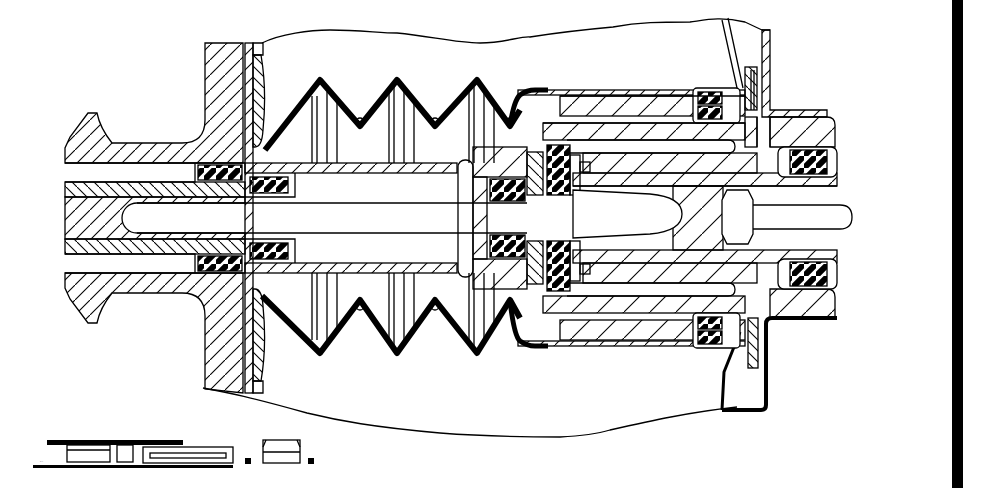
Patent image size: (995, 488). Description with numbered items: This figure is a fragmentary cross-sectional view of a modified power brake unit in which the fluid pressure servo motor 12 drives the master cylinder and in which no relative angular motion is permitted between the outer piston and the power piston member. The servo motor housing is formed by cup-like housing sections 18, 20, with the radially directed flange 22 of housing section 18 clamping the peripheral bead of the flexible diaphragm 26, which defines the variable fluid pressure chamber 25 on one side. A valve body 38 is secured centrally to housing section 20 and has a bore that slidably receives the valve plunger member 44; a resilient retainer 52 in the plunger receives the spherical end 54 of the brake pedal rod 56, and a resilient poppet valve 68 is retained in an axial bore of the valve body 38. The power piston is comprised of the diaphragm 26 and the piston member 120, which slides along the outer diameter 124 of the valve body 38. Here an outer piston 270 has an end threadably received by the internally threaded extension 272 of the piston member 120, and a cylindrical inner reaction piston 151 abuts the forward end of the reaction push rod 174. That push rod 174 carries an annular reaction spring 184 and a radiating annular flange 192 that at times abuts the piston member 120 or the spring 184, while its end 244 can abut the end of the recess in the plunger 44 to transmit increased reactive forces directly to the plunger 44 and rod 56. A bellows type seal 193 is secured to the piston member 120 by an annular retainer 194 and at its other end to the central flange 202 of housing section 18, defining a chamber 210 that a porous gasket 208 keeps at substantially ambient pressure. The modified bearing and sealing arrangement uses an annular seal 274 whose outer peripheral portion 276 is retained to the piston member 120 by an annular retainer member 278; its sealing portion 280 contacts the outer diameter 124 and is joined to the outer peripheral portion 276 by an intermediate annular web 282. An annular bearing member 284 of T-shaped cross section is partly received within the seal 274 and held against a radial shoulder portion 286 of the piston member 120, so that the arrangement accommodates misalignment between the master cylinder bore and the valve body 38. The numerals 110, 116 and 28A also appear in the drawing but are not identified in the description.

The fluid pressure servo motor 12 is at (786, 39).
The housing section 18 is at (253, 382).
The housing section 20 is at (773, 393).
The flange 22 is at (763, 477).
The fluid pressure chamber 25 is at (470, 395).
The flexible diaphragm 26 is at (750, 28).
The valve body 38 is at (805, 322).
The valve plunger member 44 is at (625, 255).
The resilient retainer 52 is at (662, 200).
The spherical end 54 is at (655, 250).
The actuating or brake pedal rod 56 is at (760, 214).
The poppet valve 68 is at (814, 322).
The body 110 is at (521, 476).
The member 116 is at (644, 487).
The piston member 120 is at (733, 60).
The outer diameter 124 is at (595, 97).
The inner reaction piston 151 is at (125, 245).
The reaction push rod 174 is at (380, 202).
The annular reaction spring 184 is at (564, 142).
The radiating annular flange 192 is at (515, 96).
The bellows type seal 193 is at (338, 84).
The annular retainer 194 is at (578, 90).
The flange 202 is at (282, 100).
The porous gasket 208 is at (205, 364).
The chamber 210 is at (303, 314).
The end of push rod 244 is at (673, 200).
The outer piston 270 is at (112, 180).
The internally threaded extension 272 is at (460, 120).
The annular seal 274 is at (735, 115).
The outer peripheral portion 276 is at (760, 72).
The annular retainer member 278 is at (745, 105).
The sealing portion 280 is at (655, 178).
The intermediate annular web 282 is at (712, 92).
The annular bearing member 284 is at (695, 318).
The radial shoulder portion 286 is at (718, 90).
The seal block 28A is at (648, 118).